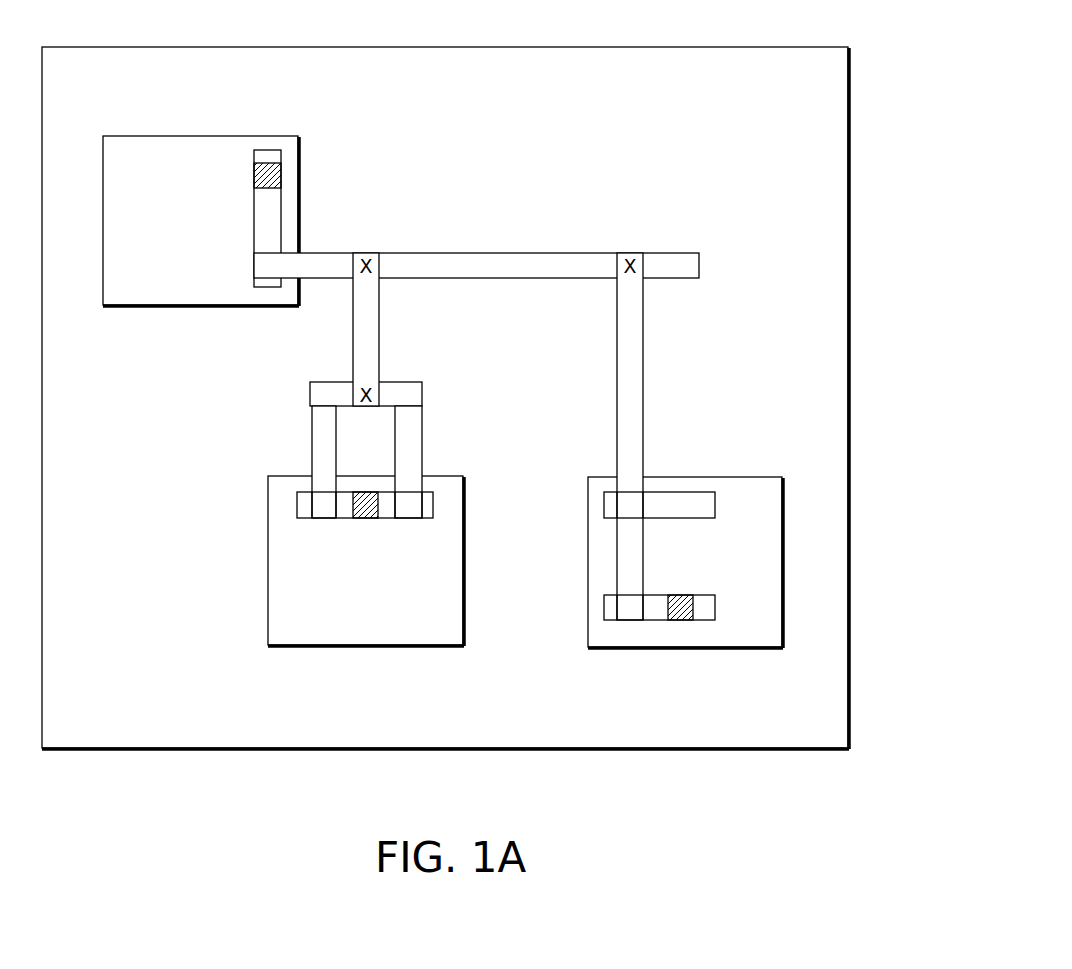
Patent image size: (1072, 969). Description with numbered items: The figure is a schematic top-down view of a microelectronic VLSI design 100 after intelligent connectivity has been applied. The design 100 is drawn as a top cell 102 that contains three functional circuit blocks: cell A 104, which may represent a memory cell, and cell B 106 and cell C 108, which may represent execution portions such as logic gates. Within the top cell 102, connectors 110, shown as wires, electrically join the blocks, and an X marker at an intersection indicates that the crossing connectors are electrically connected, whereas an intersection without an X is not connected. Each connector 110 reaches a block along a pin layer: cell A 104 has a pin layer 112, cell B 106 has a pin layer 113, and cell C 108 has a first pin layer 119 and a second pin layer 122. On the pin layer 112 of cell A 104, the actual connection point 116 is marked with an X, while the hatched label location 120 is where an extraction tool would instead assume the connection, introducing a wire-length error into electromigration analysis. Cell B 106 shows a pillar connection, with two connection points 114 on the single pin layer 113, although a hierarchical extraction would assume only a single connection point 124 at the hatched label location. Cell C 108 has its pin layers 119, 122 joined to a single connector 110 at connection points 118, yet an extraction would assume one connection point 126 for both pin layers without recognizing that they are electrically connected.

The illustration 100 is at (948, 112).
The top cell 102 is at (821, 733).
The cell A 104 is at (154, 298).
The cell B 106 is at (453, 634).
The cell C 108 is at (778, 638).
The connector 110 is at (563, 262).
The pin layer 112 is at (268, 218).
The pin layer 113 is at (388, 507).
The connection points 114 is at (324, 519).
The actual connection point 116 is at (258, 266).
The connection points 118 is at (620, 507).
The first pin layer 119 is at (707, 502).
The assumed connection point 120 is at (282, 172).
The second pin layer 122 is at (707, 612).
The assumed connection point 124 is at (369, 507).
The assumed connection point 126 is at (683, 612).